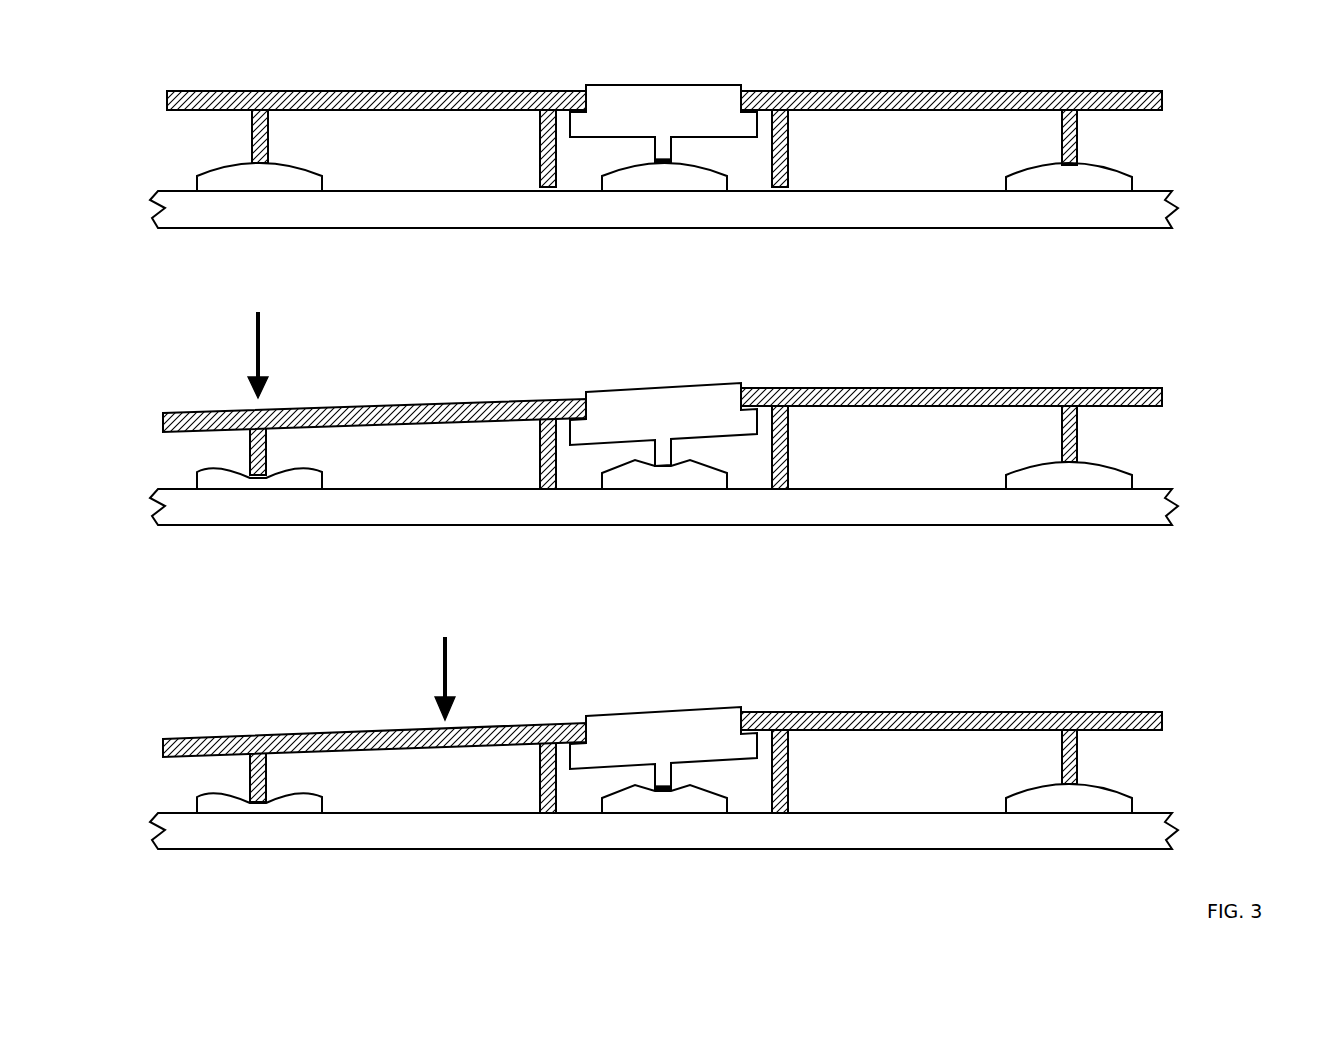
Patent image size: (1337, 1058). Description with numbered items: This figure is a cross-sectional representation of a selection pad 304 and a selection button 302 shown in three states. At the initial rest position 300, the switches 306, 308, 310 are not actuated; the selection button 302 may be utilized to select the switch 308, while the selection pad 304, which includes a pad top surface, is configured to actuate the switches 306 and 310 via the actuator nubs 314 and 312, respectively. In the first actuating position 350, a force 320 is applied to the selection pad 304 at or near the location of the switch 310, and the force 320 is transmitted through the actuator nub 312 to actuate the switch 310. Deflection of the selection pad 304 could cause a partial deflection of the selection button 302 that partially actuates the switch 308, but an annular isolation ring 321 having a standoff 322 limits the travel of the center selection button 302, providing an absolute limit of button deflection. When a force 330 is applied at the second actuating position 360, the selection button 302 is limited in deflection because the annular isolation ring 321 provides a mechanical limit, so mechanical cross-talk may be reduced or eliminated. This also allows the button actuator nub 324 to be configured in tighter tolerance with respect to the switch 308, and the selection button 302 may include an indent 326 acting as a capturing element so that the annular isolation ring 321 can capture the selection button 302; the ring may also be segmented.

The initial rest position 300 is at (1188, 62).
The first actuating position 350 is at (1188, 360).
The second actuating position 360 is at (1188, 689).
The selection button 302 is at (683, 85).
The selection pad 304 is at (862, 92).
The switch 306 is at (1118, 187).
The switch 308 is at (710, 183).
The switch 310 is at (305, 183).
The actuator nub 312 is at (252, 141).
The actuator nub 314 is at (1078, 135).
The force 320 is at (258, 338).
The annular isolation ring 321 is at (521, 91).
The standoff 322 is at (533, 167).
The button actuator nub 324 is at (655, 772).
The indent 326 is at (758, 712).
The force 330 is at (445, 665).